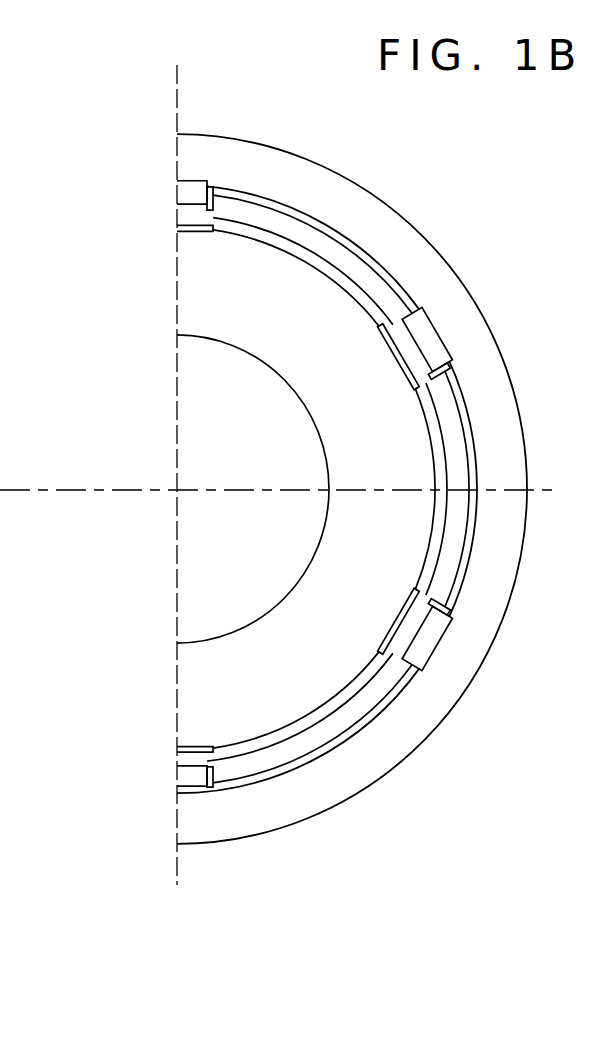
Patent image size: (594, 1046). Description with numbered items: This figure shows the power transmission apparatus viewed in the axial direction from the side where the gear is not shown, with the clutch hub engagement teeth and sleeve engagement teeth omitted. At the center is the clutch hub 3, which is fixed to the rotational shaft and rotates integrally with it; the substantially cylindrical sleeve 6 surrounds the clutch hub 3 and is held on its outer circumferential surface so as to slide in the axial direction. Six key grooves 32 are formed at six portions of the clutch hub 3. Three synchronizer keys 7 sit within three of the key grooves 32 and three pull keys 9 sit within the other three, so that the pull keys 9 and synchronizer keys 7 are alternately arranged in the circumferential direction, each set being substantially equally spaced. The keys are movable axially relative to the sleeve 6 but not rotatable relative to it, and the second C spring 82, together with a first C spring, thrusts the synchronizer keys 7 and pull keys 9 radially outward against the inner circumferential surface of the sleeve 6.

The clutch hub 3 is at (283, 398).
The sleeve 6 is at (379, 188).
The synchronizer key 7 is at (428, 333).
The pull key 9 is at (193, 197).
The key groove 32 is at (194, 232).
The second C spring 82 is at (352, 275).